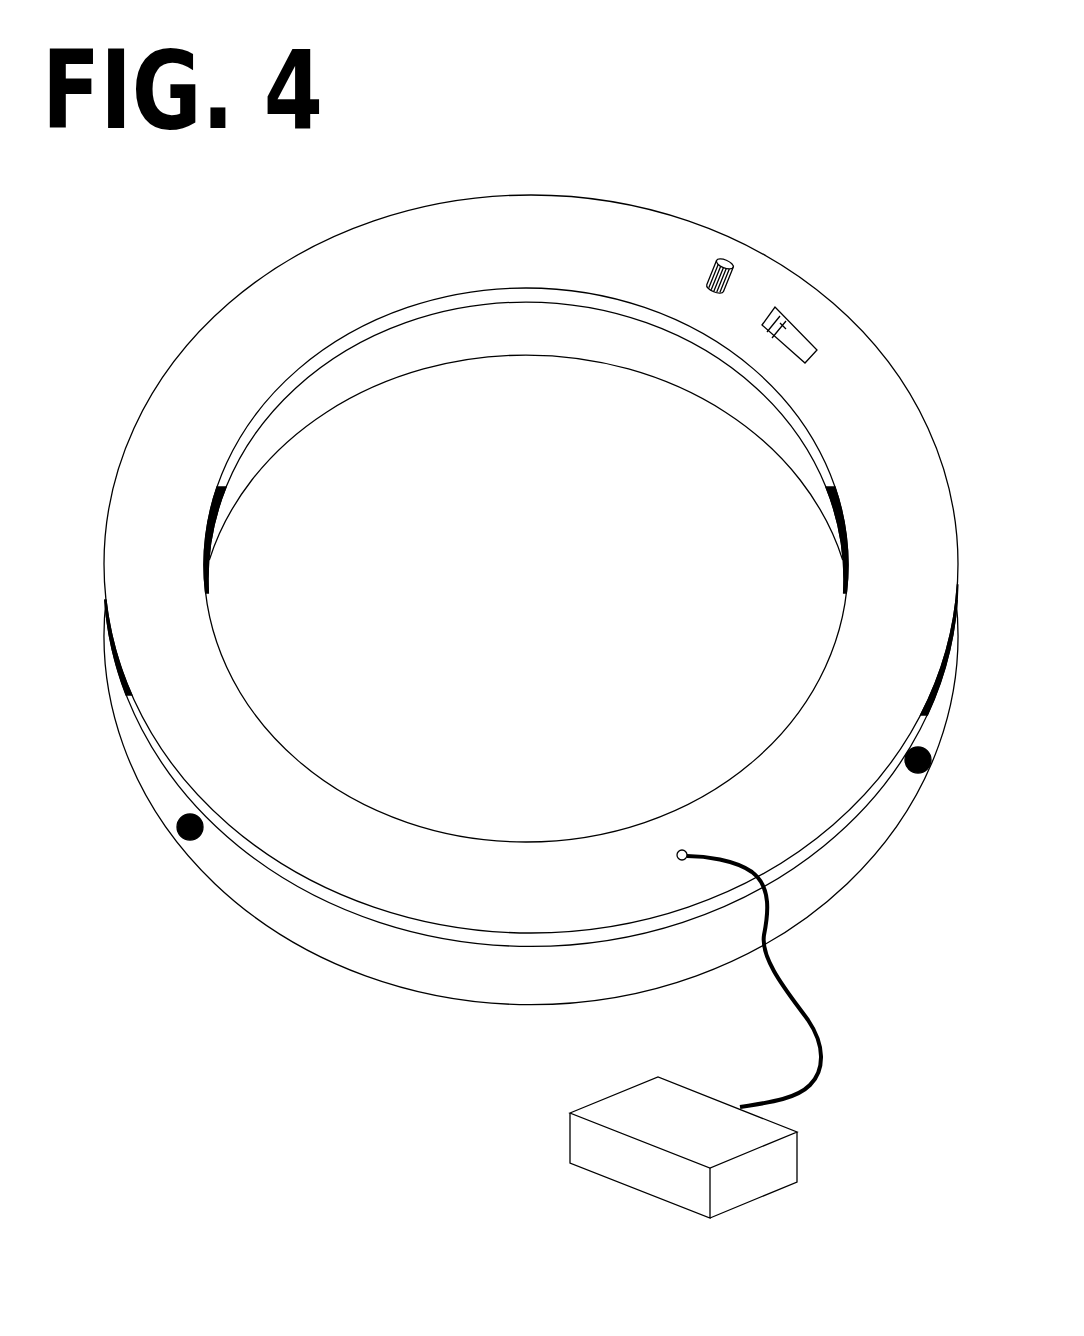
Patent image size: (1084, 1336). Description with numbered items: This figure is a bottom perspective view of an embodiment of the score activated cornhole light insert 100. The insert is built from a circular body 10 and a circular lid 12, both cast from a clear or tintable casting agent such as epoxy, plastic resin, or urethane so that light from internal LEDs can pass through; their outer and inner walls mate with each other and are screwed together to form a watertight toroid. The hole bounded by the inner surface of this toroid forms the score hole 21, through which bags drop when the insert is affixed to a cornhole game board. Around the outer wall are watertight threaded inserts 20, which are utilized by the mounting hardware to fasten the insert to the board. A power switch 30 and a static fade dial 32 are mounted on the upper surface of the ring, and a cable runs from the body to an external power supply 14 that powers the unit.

The score activated cornhole light insert 100 is at (272, 987).
The circular body 10 is at (425, 958).
The circular lid 12 is at (362, 320).
The score hole 21 is at (602, 508).
The watertight threaded inserts 20 is at (178, 840).
The static fade dial 32 is at (743, 278).
The power switch 30 is at (788, 310).
The power supply 14 is at (633, 1160).